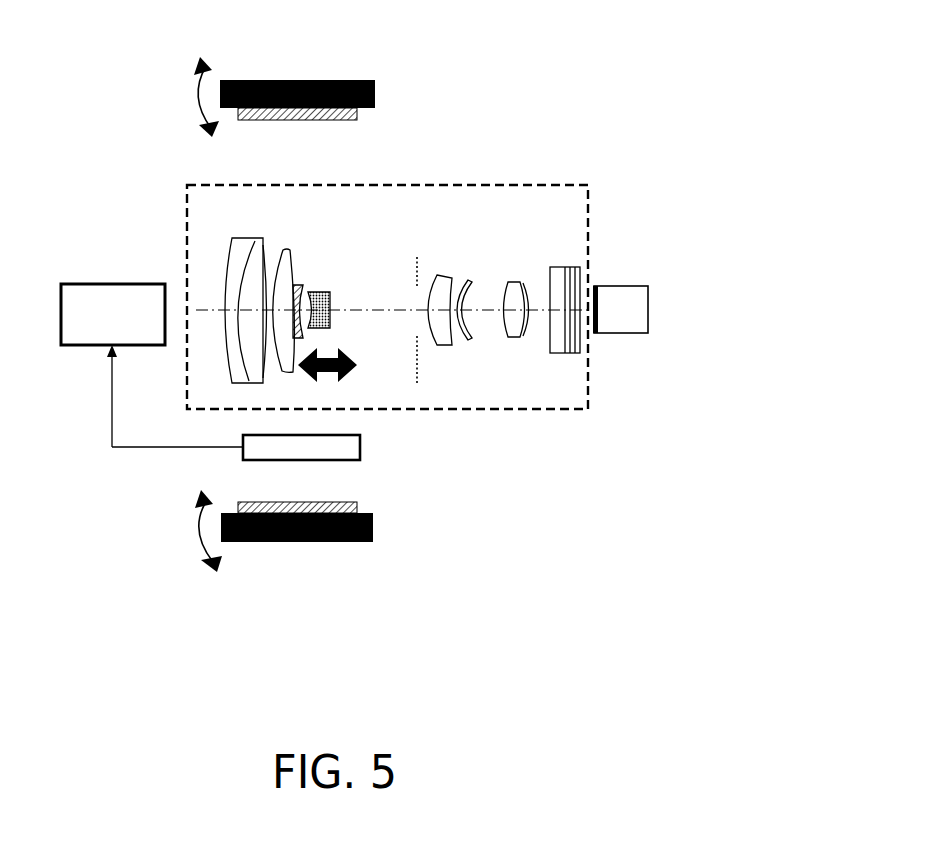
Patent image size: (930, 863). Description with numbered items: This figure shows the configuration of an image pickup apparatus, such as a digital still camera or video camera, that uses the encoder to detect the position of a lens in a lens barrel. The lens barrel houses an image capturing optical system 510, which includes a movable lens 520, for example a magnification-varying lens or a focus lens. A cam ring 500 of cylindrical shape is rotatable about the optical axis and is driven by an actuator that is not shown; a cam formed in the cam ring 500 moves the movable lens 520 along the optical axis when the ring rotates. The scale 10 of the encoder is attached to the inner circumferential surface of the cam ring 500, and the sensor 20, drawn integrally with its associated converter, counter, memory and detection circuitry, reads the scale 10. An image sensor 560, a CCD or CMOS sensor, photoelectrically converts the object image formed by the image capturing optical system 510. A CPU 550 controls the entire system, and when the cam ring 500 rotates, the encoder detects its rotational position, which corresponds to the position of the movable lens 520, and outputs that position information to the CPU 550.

The cam ring 500 is at (336, 80).
The scale 10 is at (358, 110).
The image capturing optical system 510 is at (340, 263).
The movable lens 520 is at (328, 290).
The CPU 550 is at (86, 326).
The image sensor 560 is at (630, 318).
The sensor 20 is at (360, 445).